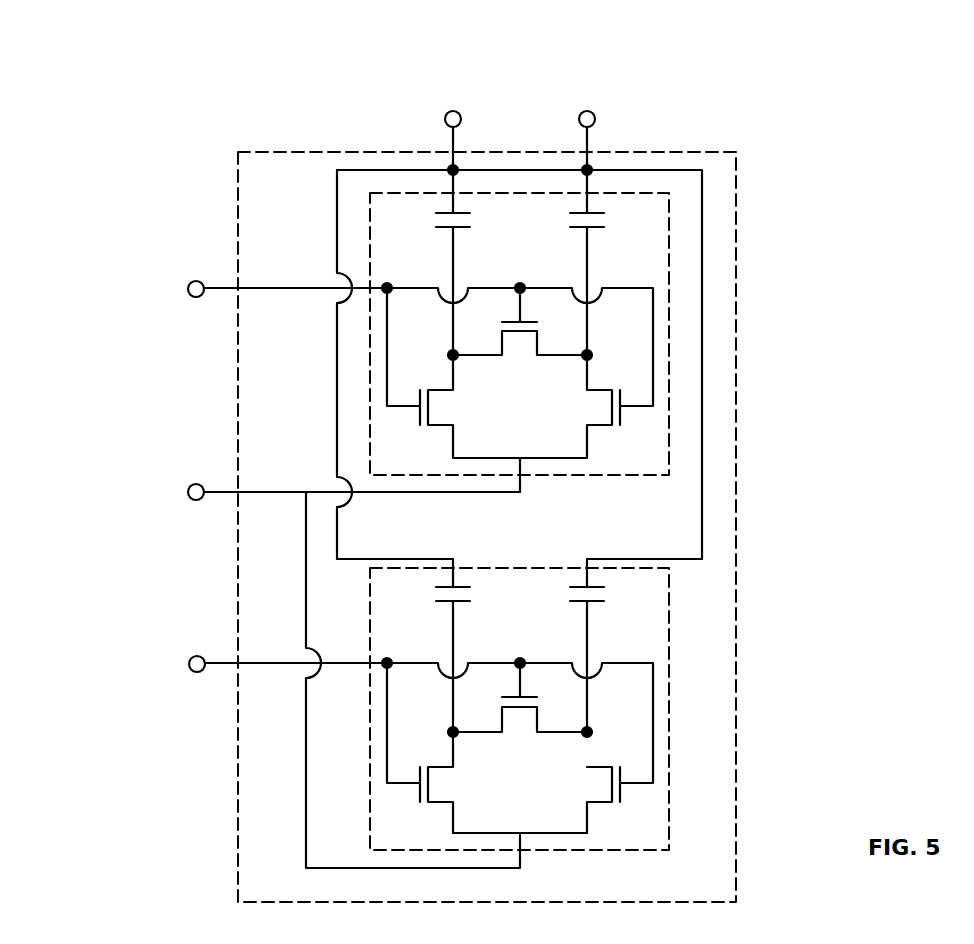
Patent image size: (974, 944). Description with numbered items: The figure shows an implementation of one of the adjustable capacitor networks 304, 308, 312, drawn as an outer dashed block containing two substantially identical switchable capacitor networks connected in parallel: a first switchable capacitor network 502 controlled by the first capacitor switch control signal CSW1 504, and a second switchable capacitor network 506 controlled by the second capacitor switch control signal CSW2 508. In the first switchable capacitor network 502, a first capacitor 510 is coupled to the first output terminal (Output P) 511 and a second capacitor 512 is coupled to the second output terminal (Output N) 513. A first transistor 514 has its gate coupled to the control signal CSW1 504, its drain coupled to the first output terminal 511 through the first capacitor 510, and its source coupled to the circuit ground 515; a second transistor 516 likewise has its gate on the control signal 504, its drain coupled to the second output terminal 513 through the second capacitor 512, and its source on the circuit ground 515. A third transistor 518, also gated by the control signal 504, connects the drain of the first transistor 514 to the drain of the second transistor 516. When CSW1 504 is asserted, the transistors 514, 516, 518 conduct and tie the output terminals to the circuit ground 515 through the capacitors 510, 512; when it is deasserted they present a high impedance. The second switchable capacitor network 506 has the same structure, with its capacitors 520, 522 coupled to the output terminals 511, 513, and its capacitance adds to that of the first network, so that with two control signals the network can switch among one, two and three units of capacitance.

The adjustable capacitor network 304 is at (293, 192).
The adjustable capacitor network 308 is at (293, 215).
The adjustable capacitor network 312 is at (293, 238).
The first switchable capacitor network 502 is at (669, 253).
The first capacitor switch control signal CSW1 504 is at (196, 280).
The second switchable capacitor network 506 is at (670, 663).
The second capacitor switch control signal CSW2 508 is at (197, 655).
The first capacitor 510 is at (442, 228).
The first output terminal 511 is at (453, 110).
The second capacitor 512 is at (580, 228).
The second output terminal 513 is at (587, 110).
The first transistor 514 is at (443, 395).
The circuit ground 515 is at (196, 483).
The second transistor 516 is at (597, 395).
The third transistor 518 is at (502, 347).
The capacitor of the second switchable capacitor network 520 is at (442, 602).
The capacitor of the second switchable capacitor network 522 is at (582, 602).